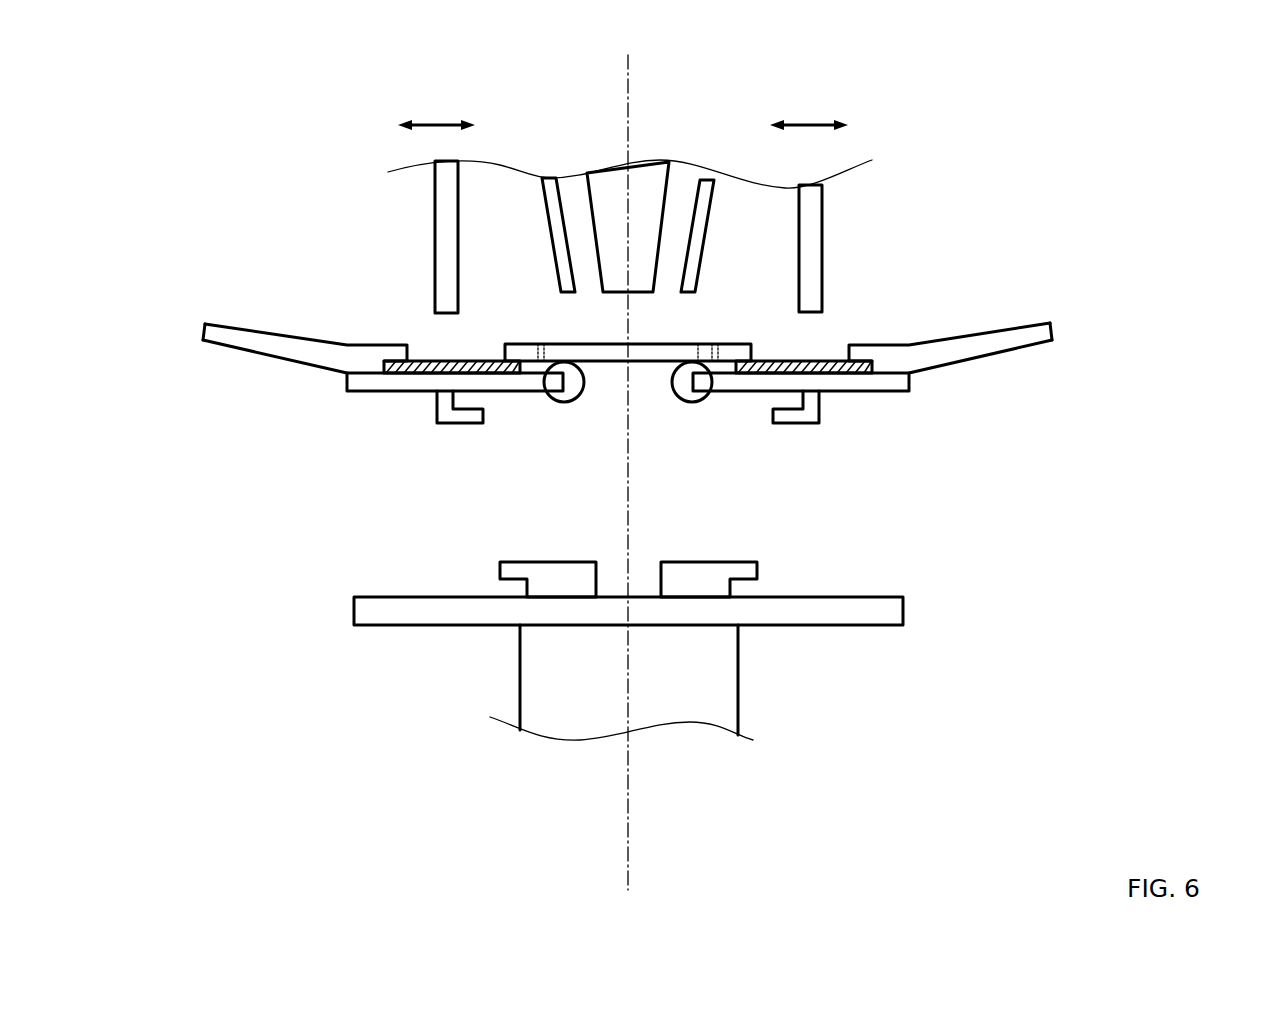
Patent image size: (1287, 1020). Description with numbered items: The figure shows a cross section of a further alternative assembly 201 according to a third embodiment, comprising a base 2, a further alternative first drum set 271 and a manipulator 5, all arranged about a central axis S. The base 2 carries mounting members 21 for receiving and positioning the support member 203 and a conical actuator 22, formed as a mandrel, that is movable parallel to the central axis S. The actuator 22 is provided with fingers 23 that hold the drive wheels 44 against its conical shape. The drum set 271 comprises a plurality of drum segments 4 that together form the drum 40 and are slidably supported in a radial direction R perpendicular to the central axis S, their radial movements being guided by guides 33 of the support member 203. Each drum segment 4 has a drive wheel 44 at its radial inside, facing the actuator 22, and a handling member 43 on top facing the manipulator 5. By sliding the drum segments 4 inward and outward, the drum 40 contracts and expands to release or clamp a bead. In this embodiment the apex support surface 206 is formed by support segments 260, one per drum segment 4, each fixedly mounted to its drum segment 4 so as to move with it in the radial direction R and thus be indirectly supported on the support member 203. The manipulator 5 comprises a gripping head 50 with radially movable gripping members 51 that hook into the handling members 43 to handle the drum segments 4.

The base 2 is at (593, 170).
The further alternative assembly 201 is at (619, 313).
The mounting member 21 is at (445, 217).
The actuator 22 is at (665, 180).
The fingers 23 is at (568, 180).
The guides 33 is at (479, 360).
The support member 203 is at (735, 348).
The apex support surface 206 is at (631, 395).
The support segments 260 is at (290, 353).
The drum segments 4 is at (628, 429).
The drum 40 is at (375, 392).
The handling member 43 is at (457, 423).
The drive wheel 44 is at (562, 400).
The first drum set 271 is at (194, 499).
The manipulator 5 is at (609, 635).
The gripping members 51 is at (548, 570).
The gripping head 50 is at (537, 678).
The central axis S is at (629, 489).
The radial direction R is at (625, 113).